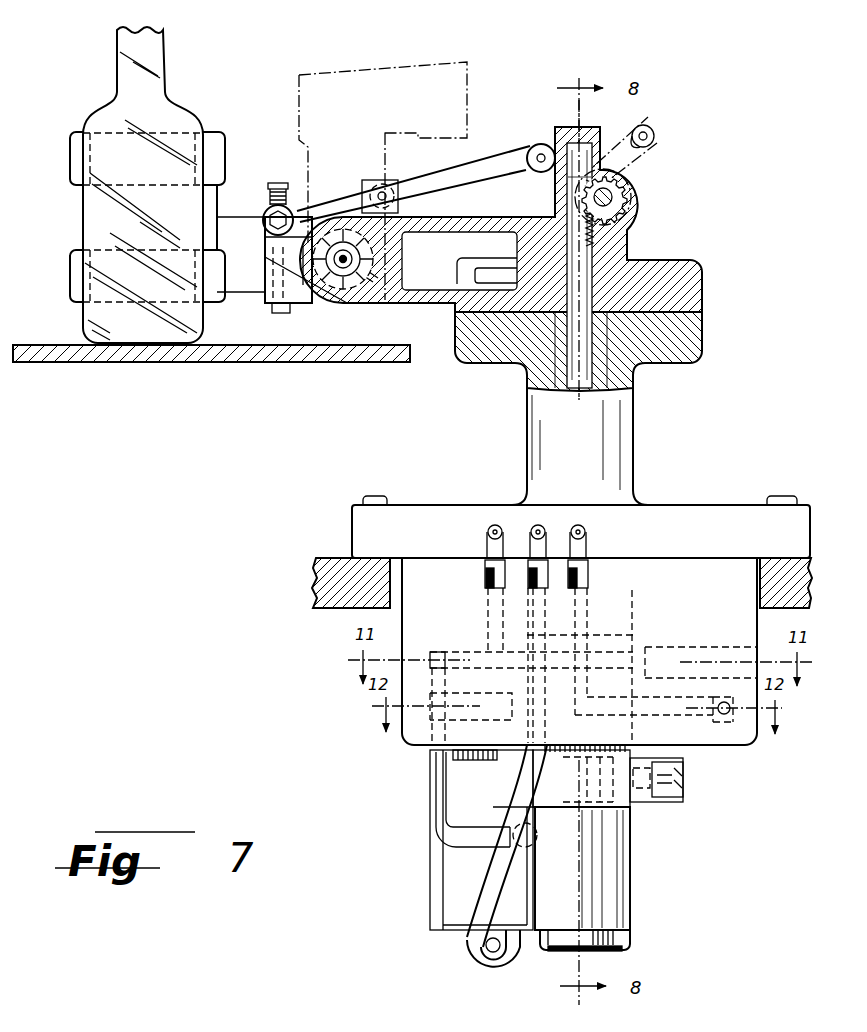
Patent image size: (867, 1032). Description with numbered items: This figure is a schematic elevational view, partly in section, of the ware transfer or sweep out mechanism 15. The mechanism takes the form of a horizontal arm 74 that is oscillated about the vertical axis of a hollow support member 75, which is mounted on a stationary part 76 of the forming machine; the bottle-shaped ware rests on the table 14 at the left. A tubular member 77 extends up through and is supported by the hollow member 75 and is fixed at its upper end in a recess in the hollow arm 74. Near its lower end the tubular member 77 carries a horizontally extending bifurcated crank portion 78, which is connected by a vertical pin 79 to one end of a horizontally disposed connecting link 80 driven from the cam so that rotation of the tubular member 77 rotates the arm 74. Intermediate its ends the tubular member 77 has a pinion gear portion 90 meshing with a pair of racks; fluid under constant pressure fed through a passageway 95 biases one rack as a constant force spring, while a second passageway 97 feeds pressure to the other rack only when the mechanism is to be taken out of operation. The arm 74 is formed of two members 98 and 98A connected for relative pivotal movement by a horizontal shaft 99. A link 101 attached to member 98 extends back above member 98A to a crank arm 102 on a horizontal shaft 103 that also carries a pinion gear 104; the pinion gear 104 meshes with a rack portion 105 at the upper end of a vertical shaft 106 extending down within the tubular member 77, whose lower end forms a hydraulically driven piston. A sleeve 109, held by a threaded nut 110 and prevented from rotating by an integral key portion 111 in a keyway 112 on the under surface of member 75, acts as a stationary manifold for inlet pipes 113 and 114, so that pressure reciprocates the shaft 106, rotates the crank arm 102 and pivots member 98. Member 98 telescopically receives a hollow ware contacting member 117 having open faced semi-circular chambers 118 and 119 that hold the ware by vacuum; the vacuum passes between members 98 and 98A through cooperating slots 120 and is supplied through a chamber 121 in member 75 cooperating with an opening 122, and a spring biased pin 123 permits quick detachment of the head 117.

The table 14 is at (266, 352).
The sweep out arm mechanism 15 is at (656, 241).
The horizontal arm 74 is at (421, 314).
The hollow support member 75 is at (622, 449).
The stationary part 76 is at (327, 600).
The tubular member 77 is at (597, 374).
The bifurcated crank portion 78 is at (684, 798).
The vertical pin 79 is at (660, 757).
The connecting link 80 is at (686, 784).
The pinion gear portion 90 is at (630, 746).
The passageway 95 is at (497, 567).
The passageway 97 is at (590, 575).
The arm member 98 is at (305, 298).
The arm member 98A is at (430, 225).
The horizontal shaft 99 is at (344, 262).
The link 101 is at (483, 157).
The crank arm 102 is at (552, 172).
The horizontal shaft 103 is at (612, 196).
The pinion gear 104 is at (594, 181).
The rack portion 105 is at (584, 177).
The vertical shaft 106 is at (580, 292).
The sleeve 109 is at (617, 880).
The threaded nut 110 is at (613, 933).
The key portion 111 is at (473, 762).
The keyway 112 is at (470, 762).
The inlet pipe 113 is at (434, 803).
The inlet pipe 114 is at (480, 952).
The ware contacting member 117 is at (217, 118).
The semi-circular annular chamber 118 is at (210, 158).
The semi-circular annular chamber 119 is at (218, 293).
The cooperating slots 120 is at (368, 278).
The chamber 121 is at (605, 325).
The opening 122 is at (478, 375).
The spring biased pin 123 is at (275, 184).